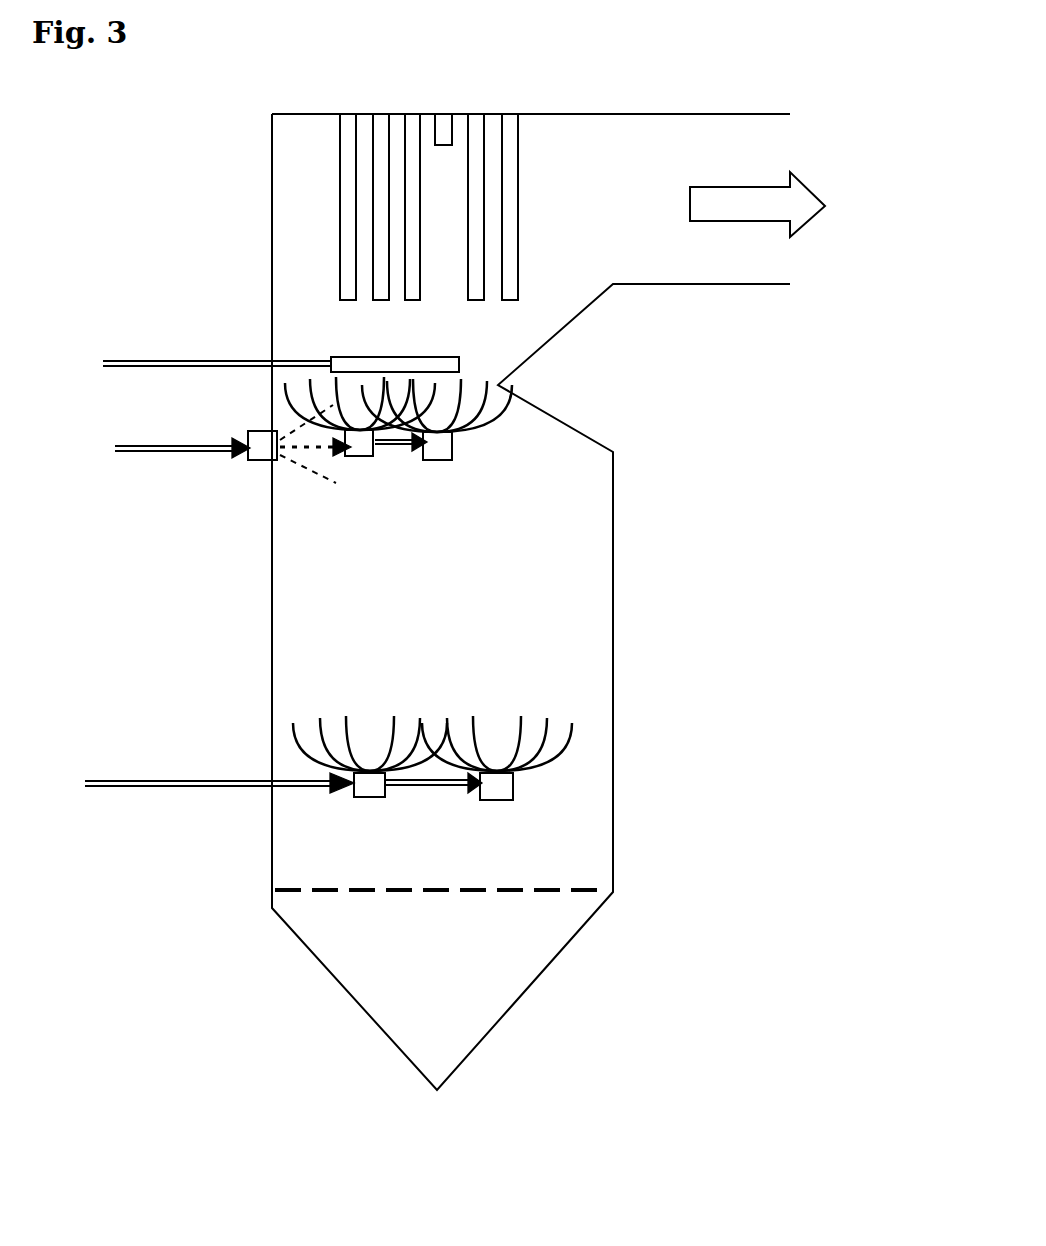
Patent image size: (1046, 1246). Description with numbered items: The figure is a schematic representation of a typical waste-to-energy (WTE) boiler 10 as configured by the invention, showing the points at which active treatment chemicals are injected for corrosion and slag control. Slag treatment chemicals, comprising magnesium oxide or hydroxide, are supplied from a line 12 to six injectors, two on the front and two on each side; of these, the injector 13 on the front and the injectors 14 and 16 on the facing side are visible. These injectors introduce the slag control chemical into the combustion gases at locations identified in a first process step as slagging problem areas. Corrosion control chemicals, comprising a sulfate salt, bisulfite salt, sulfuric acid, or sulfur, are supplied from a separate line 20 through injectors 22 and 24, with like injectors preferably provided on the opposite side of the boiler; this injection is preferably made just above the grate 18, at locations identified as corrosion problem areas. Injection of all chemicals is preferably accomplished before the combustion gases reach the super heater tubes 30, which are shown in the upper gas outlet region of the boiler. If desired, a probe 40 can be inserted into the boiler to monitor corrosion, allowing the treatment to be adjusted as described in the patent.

The WTE boiler 10 is at (668, 490).
The line 12 is at (158, 452).
The injector 13 is at (258, 460).
The injector 14 is at (358, 445).
The injector 16 is at (438, 448).
The grate 18 is at (527, 890).
The line 20 is at (120, 780).
The injector 22 is at (370, 768).
The injector 24 is at (497, 768).
The super heater tubes 30 is at (530, 183).
The probe 40 is at (135, 358).